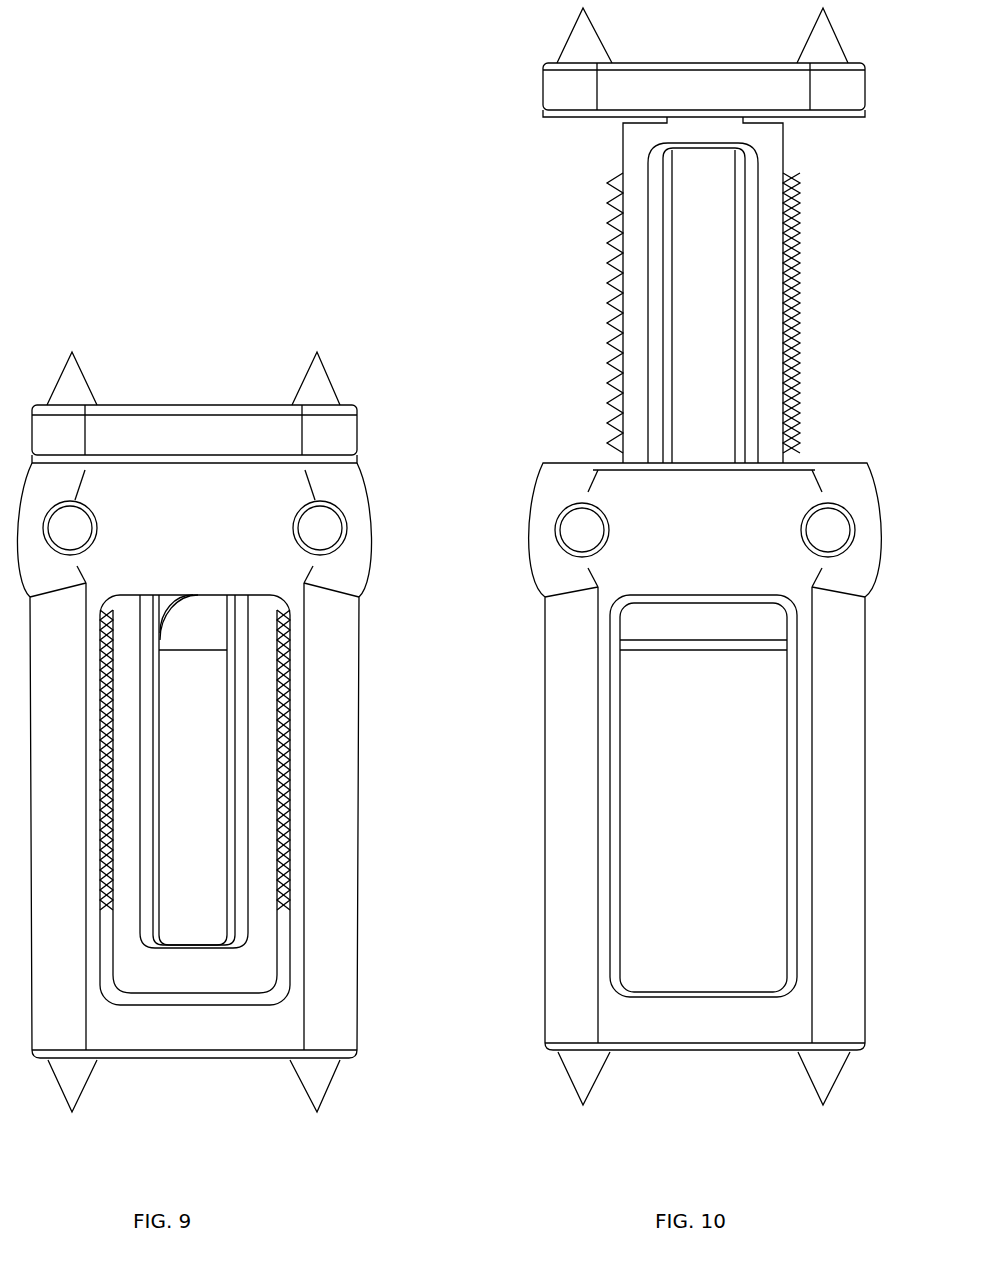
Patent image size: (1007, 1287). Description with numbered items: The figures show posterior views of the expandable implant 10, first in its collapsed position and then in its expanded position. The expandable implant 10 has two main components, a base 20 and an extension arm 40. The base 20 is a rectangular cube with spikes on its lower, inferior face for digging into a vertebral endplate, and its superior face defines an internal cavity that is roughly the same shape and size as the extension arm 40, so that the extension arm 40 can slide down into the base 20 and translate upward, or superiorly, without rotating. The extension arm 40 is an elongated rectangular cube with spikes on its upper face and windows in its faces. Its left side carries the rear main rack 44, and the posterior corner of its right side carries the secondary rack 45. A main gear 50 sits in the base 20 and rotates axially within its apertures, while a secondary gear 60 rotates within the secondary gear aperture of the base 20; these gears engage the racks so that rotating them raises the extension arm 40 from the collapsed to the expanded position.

In FIG. 9, the expandable implant 10 is at (185, 325).
In FIG. 10, the expandable implant 10 is at (485, 80).
In FIG. 9, the base 20 is at (293, 1005).
In FIG. 10, the base 20 is at (560, 1028).
In FIG. 9, the extension arm 40 is at (162, 440).
In FIG. 10, the extension arm 40 is at (562, 97).
In FIG. 10, the rear main rack 44 is at (600, 250).
In FIG. 10, the secondary rack 45 is at (797, 220).
In FIG. 9, the main gear 50 is at (67, 517).
In FIG. 10, the main gear 50 is at (573, 518).
In FIG. 9, the secondary gear 60 is at (322, 537).
In FIG. 10, the secondary gear 60 is at (828, 535).